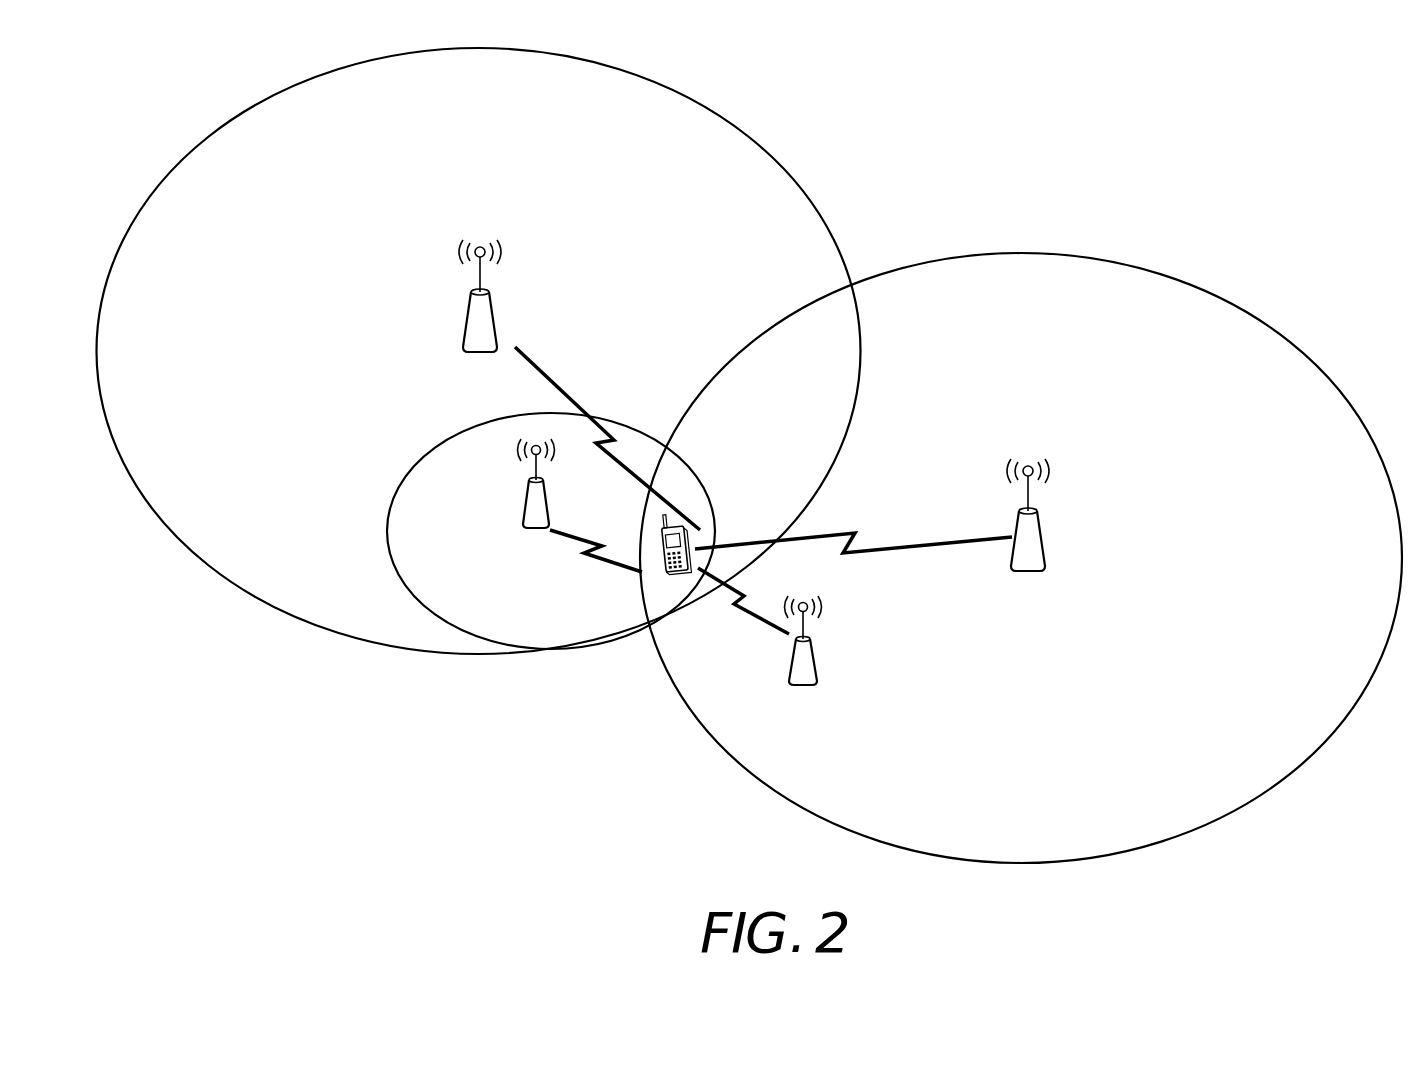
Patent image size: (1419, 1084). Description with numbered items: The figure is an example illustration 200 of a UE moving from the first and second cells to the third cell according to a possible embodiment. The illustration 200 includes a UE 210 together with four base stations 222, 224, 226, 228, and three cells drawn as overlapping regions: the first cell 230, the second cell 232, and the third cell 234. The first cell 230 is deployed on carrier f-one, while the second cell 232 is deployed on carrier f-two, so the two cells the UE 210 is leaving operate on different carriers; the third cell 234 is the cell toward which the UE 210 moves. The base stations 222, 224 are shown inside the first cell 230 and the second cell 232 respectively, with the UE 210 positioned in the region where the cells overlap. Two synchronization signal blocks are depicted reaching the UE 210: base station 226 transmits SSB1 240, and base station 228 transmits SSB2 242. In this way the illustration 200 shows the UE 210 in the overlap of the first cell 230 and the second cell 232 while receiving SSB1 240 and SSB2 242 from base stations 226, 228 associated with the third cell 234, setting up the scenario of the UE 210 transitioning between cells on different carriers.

The illustration 200 is at (1299, 164).
The UE 210 is at (664, 522).
The base station 222 is at (466, 311).
The base station 224 is at (524, 509).
The base station 226 is at (1045, 541).
The base station 228 is at (817, 667).
The cell 1 230 is at (272, 610).
The cell 2 232 is at (700, 475).
The cell 3 234 is at (1276, 331).
The SSB1 240 is at (918, 498).
The SSB2 242 is at (738, 603).